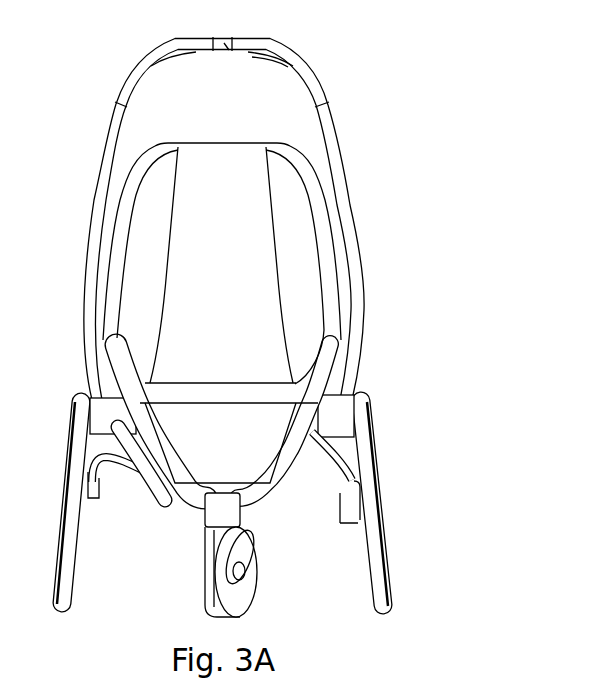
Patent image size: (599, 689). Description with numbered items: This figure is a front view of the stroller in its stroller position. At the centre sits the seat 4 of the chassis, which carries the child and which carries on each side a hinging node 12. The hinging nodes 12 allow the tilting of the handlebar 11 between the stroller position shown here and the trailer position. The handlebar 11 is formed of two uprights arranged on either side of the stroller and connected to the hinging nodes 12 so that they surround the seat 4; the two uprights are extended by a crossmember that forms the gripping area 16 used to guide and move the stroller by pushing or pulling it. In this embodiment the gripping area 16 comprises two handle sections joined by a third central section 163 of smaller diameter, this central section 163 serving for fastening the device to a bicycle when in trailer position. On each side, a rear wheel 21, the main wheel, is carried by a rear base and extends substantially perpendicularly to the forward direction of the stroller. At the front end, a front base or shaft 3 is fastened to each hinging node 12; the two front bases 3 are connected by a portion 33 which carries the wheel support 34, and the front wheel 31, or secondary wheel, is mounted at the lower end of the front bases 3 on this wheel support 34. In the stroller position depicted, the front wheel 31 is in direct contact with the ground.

The gripping area 16 is at (300, 63).
The handlebar 11 is at (345, 180).
The third central section 163 is at (213, 55).
The seat 4 is at (310, 272).
The hinging node 12 is at (347, 412).
The rear wheel 21 is at (374, 488).
The front base 3 is at (150, 481).
The wheel support 34 is at (235, 512).
The portion connecting the two front bases 33 is at (190, 510).
The front wheel 31 is at (252, 597).